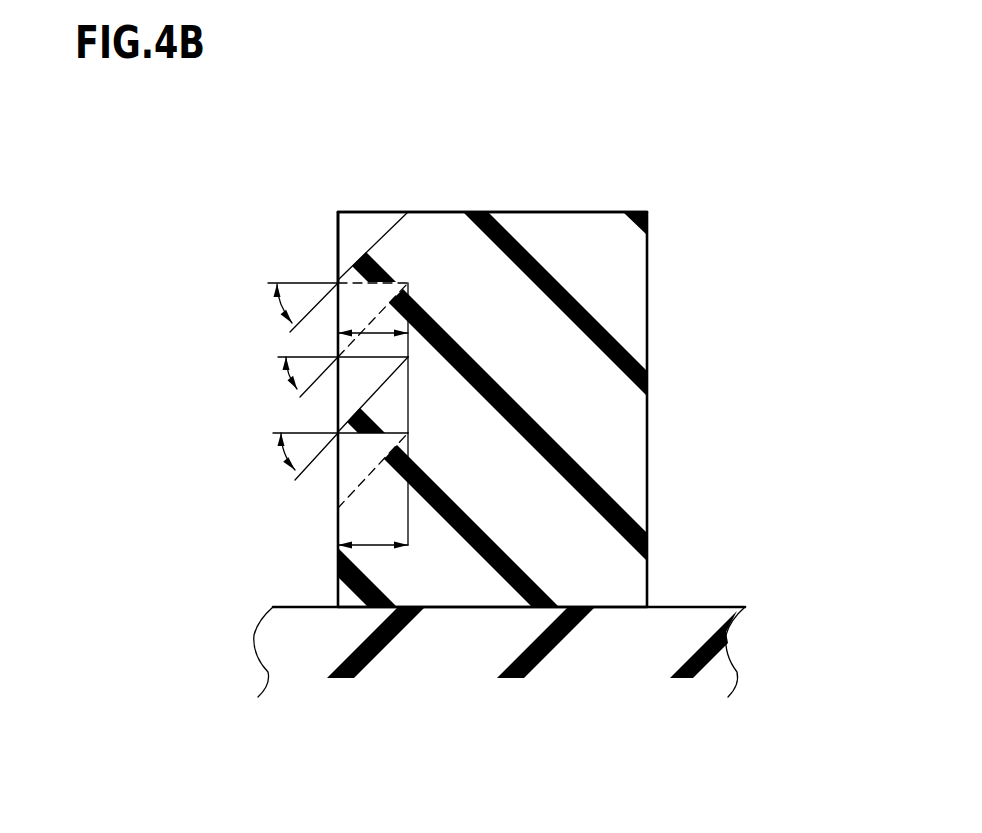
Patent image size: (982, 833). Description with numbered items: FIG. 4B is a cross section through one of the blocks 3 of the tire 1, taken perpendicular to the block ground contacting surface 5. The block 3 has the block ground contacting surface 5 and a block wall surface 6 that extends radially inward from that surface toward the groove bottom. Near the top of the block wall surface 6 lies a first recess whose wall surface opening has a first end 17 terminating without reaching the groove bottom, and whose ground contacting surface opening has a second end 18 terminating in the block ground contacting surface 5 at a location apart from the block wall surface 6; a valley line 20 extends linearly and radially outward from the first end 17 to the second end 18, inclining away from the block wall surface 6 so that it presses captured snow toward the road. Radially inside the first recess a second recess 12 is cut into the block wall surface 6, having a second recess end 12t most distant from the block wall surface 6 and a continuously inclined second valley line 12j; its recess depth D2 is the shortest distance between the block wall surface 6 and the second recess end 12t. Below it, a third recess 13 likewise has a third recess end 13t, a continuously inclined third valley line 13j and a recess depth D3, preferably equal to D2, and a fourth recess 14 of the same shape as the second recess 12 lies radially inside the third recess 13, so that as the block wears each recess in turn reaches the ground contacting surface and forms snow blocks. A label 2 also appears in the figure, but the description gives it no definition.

The block 3 is at (661, 199).
The block ground contacting surface 5 is at (578, 212).
The block wall surface 6 is at (338, 579).
The second recess 12 is at (436, 273).
The second recess end 12t is at (410, 284).
The second valley line 12j is at (374, 317).
The third recess 13 is at (405, 388).
The third recess end 13t is at (385, 357).
The third valley line 13j is at (360, 409).
The fourth recess 14 is at (328, 522).
The first end 17 is at (338, 282).
The second end 18 is at (408, 212).
The valley line 20 is at (370, 247).
The tire 1 is at (283, 307).
The second inclination angle 2 is at (289, 377).
The recess depth D2 is at (368, 334).
The recess depth D3 is at (380, 548).